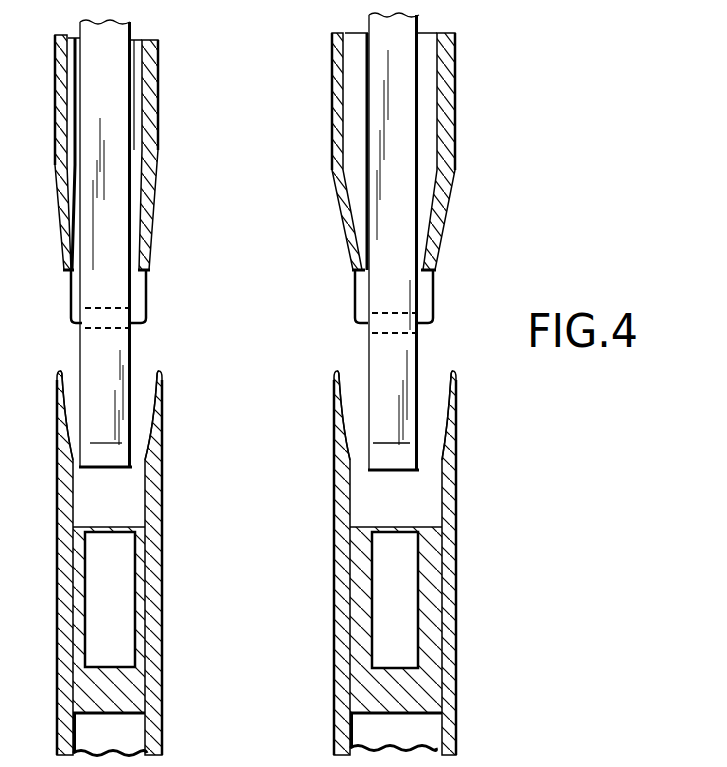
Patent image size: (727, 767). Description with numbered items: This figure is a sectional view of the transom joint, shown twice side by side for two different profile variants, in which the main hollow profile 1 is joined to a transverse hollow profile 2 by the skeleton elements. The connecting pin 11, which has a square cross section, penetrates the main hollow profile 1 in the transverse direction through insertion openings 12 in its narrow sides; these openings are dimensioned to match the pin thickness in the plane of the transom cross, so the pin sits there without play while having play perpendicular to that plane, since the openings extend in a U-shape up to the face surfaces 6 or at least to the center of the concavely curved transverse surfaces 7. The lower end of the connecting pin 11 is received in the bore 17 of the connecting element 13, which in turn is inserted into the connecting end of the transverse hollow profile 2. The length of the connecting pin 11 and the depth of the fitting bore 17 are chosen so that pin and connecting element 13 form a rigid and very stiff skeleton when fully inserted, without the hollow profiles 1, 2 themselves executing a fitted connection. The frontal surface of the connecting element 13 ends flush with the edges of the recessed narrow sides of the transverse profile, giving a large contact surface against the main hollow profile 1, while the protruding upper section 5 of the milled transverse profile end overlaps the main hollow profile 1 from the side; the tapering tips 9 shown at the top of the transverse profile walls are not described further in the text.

The main hollow profile 1 is at (322, 88).
The transverse hollow profile 2 is at (325, 728).
The upper section 5 is at (163, 477).
The face surface 6 is at (340, 52).
The transverse surface 7 is at (353, 218).
The tapered tip 9 is at (333, 397).
The connecting pin 11 is at (382, 128).
The insertion opening 12 is at (110, 317).
The connecting element 13 is at (140, 623).
The bore 17 is at (112, 563).